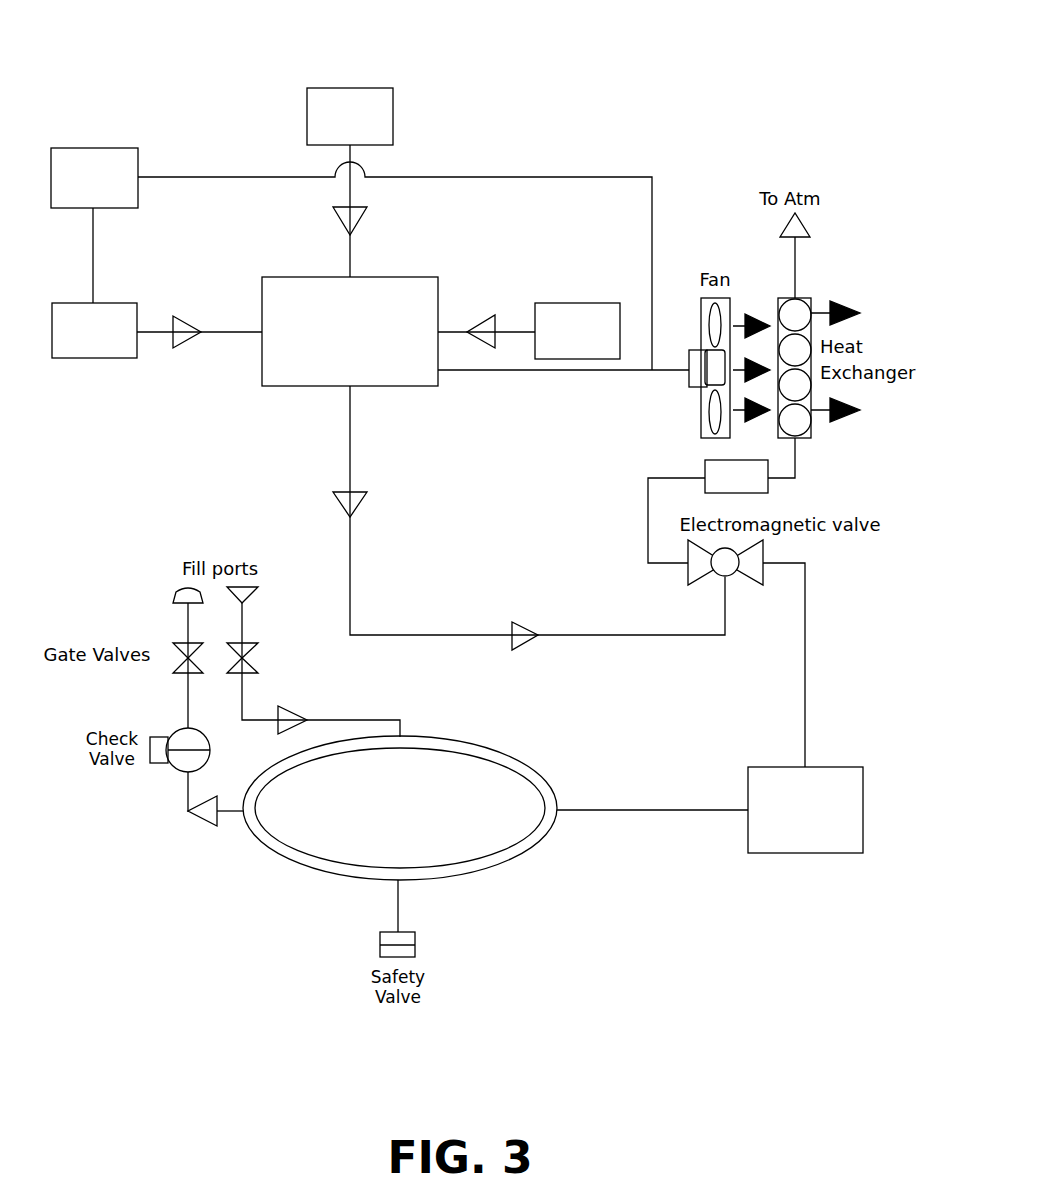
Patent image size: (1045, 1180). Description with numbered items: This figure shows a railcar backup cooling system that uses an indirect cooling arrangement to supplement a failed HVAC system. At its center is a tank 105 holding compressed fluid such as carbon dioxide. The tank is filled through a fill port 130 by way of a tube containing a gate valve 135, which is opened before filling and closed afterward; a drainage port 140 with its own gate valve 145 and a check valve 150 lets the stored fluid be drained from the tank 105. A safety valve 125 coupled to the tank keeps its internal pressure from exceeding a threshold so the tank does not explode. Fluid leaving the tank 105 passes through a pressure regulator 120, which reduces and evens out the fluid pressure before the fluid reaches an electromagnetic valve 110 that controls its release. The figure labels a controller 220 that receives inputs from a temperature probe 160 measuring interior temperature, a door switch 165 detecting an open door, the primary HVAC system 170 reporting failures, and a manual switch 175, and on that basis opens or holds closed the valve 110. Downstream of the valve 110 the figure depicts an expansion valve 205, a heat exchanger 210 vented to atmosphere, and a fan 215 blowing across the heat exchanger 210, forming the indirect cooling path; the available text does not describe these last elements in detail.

The tank 105 is at (488, 748).
The electromagnetic valve 110 is at (728, 578).
The pressure regulator 120 is at (863, 787).
The safety valve 125 is at (405, 932).
The fill port 130 is at (250, 597).
The gate valve 135 is at (262, 658).
The drainage port 140 is at (176, 590).
The gate valve 145 is at (178, 665).
The check valve 150 is at (178, 770).
The temperature probe 160 is at (577, 303).
The door switch 165 is at (350, 88).
The primary HVAC system 170 is at (95, 148).
The manual switch 175 is at (93, 358).
The expansion valve 205 is at (740, 493).
The heat exchanger 210 is at (818, 425).
The fan 215 is at (690, 403).
The controller 220 is at (375, 386).